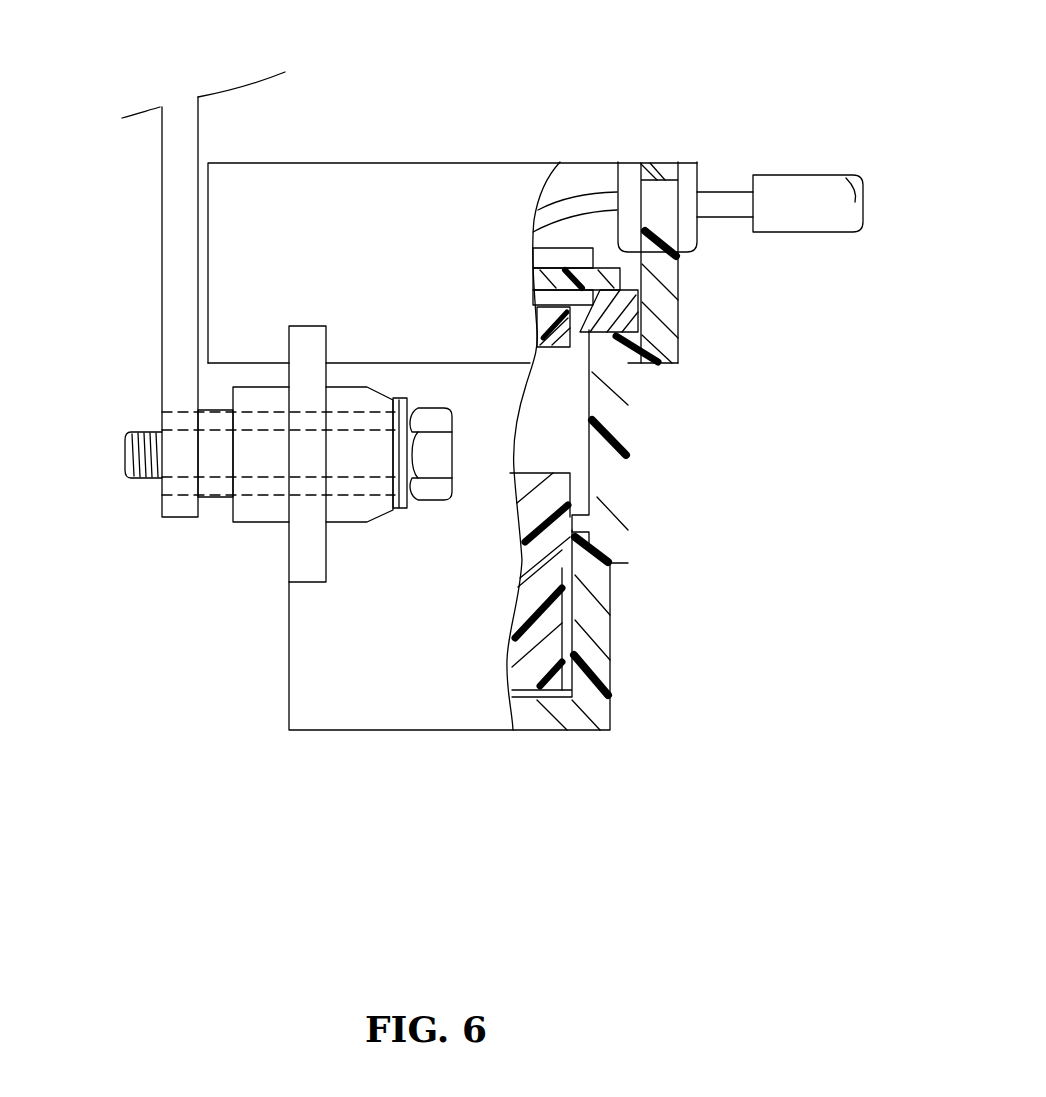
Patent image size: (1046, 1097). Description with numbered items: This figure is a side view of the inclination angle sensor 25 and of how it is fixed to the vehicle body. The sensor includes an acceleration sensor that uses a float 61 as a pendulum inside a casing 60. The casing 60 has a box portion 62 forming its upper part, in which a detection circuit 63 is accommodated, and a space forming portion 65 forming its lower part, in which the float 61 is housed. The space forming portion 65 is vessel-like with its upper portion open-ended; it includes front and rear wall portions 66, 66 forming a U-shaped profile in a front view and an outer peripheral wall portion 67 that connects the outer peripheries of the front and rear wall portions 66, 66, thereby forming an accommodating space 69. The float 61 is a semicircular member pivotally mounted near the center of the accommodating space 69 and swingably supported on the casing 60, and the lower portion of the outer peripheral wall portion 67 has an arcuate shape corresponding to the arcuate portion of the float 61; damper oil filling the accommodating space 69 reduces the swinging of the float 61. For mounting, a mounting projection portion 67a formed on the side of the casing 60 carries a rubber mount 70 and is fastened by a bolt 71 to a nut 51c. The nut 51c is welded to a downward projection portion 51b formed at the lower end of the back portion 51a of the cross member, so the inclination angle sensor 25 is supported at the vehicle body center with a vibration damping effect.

The inclination angle sensor 25 is at (710, 106).
The back portion 51a is at (166, 168).
The downward projection portion 51b is at (167, 503).
The nut 51c is at (218, 498).
The casing 60 is at (725, 311).
The float 61 is at (553, 612).
The box portion 62 is at (389, 183).
The detection circuit 63 is at (590, 168).
The space forming portion 65 is at (615, 490).
The front and rear wall portions 66 is at (298, 683).
The outer peripheral wall portion 67 is at (452, 722).
The mounting projection portion 67a is at (302, 347).
The accommodating space 69 is at (570, 408).
The rubber mount 70 is at (265, 517).
The bolt 71 is at (442, 450).